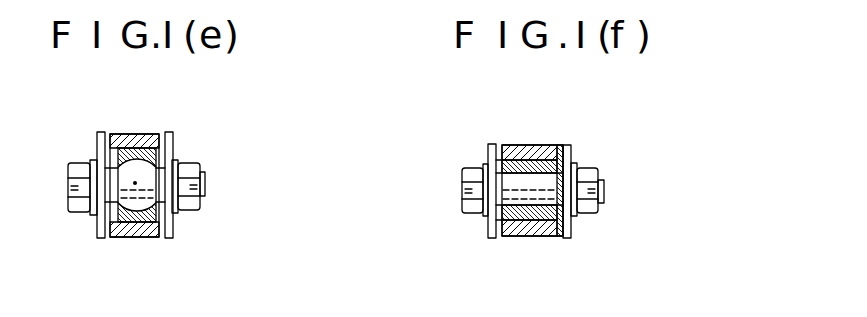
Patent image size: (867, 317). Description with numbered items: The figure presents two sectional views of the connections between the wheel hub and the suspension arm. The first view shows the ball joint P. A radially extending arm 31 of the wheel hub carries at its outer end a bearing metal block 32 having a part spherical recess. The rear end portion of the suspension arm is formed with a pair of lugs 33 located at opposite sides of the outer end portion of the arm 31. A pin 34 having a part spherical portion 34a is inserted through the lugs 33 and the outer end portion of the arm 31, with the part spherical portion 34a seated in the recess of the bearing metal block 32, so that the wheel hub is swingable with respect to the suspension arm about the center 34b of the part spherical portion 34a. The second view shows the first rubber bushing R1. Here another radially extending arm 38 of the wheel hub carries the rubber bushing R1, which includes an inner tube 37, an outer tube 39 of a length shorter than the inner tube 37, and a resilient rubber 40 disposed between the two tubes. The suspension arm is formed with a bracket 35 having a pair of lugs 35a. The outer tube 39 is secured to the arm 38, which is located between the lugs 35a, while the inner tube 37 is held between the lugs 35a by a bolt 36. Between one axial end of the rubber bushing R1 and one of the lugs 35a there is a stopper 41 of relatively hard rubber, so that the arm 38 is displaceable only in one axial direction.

The ball joint P is at (108, 120).
The radially extending arm 31 is at (152, 134).
The bearing metal block 32 is at (131, 148).
The lugs 33 is at (97, 231).
The pin 34 is at (110, 175).
The part spherical portion 34a is at (140, 210).
The center 34b is at (135, 183).
The rubber bushing R1 is at (485, 225).
The bracket 35 is at (487, 238).
The lugs 35a is at (489, 238).
The bolt 36 is at (550, 147).
The inner tube 37 is at (546, 236).
The radially extending arm 38 is at (535, 145).
The outer tube 39 is at (537, 236).
The resilient rubber 40 is at (508, 145).
The stopper 41 is at (572, 152).